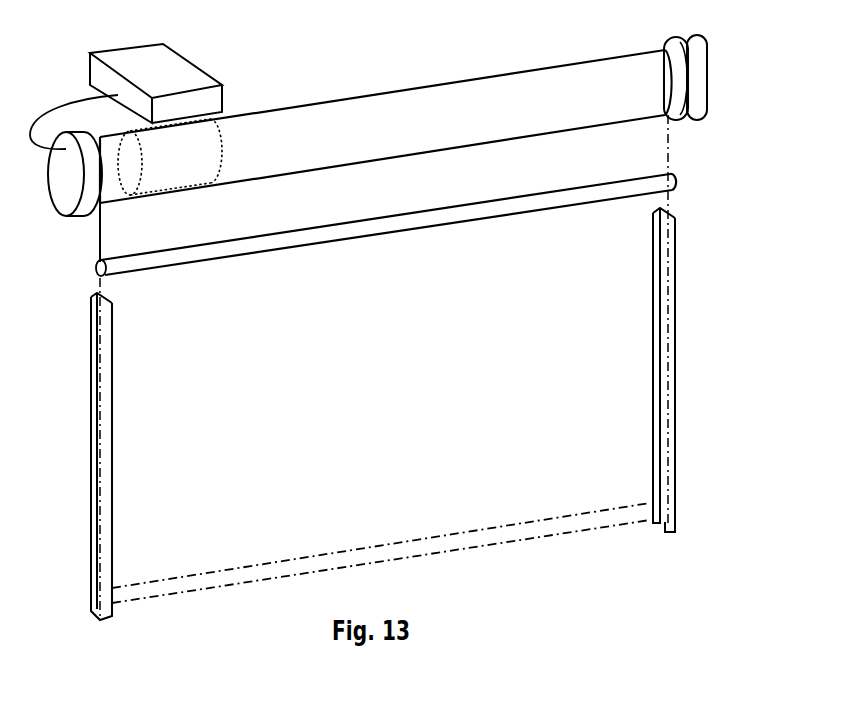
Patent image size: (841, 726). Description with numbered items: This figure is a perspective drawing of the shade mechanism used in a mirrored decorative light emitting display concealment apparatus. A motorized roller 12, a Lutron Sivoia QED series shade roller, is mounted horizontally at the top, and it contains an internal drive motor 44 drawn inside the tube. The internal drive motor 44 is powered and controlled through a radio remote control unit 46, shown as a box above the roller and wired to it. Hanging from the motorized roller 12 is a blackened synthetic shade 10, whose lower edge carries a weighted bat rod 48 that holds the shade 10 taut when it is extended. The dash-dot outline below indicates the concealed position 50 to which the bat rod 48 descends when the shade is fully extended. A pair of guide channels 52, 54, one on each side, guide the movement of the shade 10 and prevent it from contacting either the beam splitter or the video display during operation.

The shade 10 is at (98, 249).
The motorized roller 12 is at (333, 97).
The internal drive motor 44 is at (223, 158).
The radio remote control unit 46 is at (190, 60).
The weighted bat rod 48 is at (247, 256).
The concealed position 50 is at (367, 548).
The guide channel 52 is at (90, 440).
The guide channel 54 is at (675, 298).